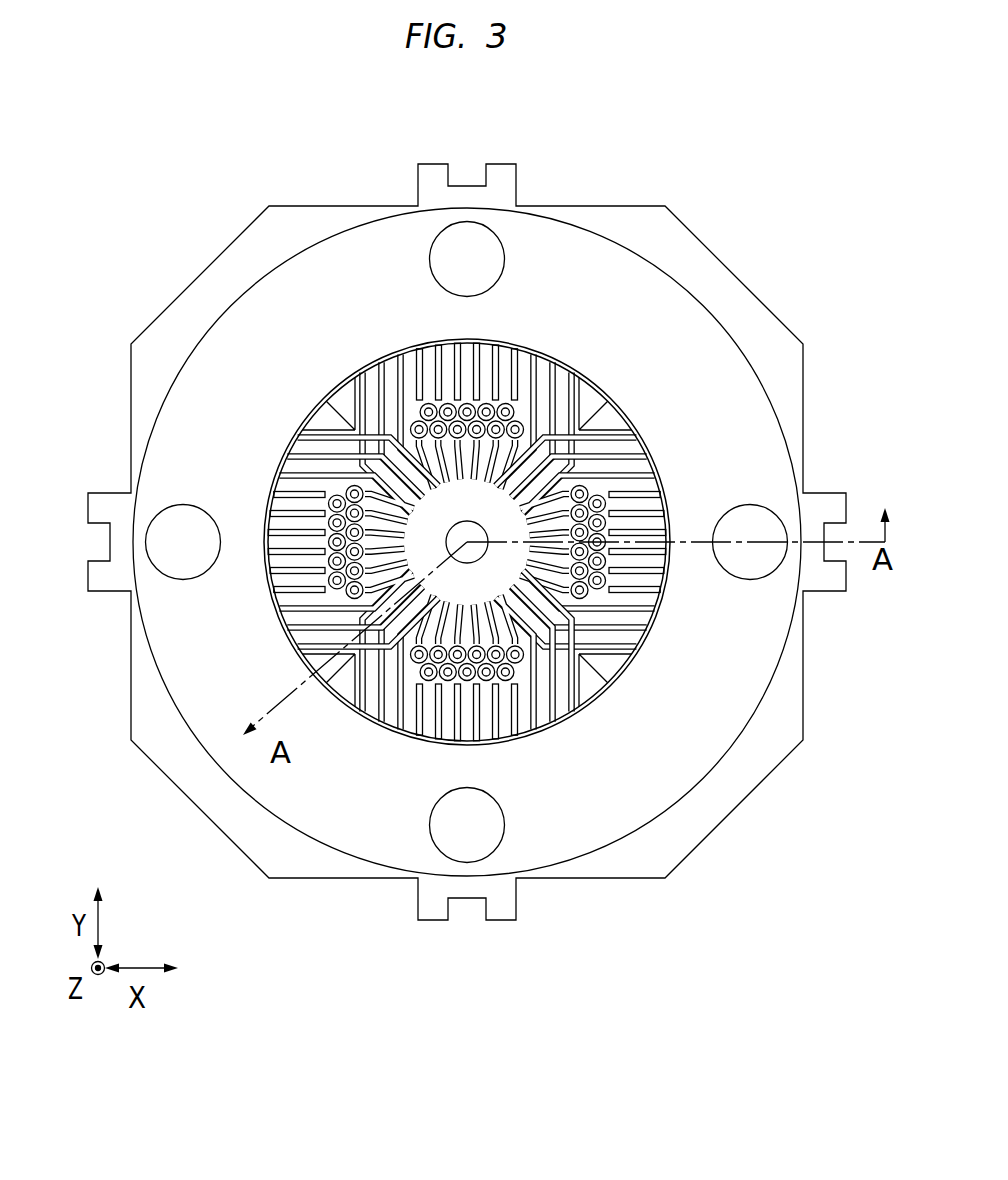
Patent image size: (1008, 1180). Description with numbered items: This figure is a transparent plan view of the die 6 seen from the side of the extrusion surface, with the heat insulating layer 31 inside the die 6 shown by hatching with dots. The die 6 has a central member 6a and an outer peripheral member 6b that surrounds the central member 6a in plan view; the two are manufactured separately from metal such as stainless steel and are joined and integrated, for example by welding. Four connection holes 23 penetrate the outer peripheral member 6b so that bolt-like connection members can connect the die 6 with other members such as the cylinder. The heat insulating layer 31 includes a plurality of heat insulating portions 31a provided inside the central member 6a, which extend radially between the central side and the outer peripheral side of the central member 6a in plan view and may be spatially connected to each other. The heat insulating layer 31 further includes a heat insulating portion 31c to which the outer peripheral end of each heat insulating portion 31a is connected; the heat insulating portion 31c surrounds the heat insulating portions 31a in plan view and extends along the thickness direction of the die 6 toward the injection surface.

The die 6 is at (772, 168).
The central member 6a is at (616, 399).
The outer peripheral member 6b is at (702, 335).
The connection hole 23 is at (447, 262).
The heat insulating layer 31 is at (467, 542).
The heat insulating portion 31a is at (432, 345).
The heat insulating portion 31c is at (353, 403).